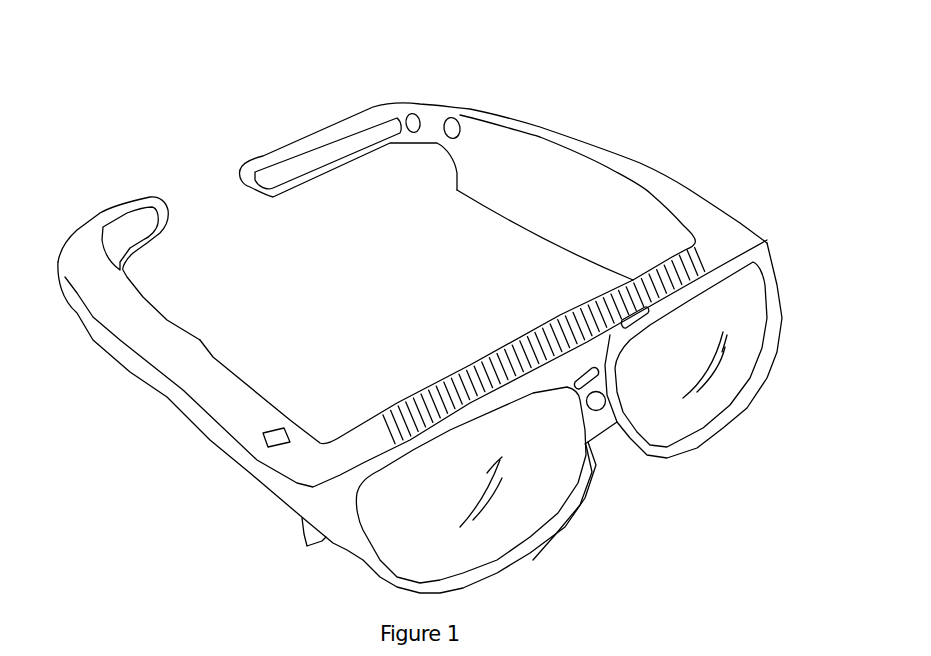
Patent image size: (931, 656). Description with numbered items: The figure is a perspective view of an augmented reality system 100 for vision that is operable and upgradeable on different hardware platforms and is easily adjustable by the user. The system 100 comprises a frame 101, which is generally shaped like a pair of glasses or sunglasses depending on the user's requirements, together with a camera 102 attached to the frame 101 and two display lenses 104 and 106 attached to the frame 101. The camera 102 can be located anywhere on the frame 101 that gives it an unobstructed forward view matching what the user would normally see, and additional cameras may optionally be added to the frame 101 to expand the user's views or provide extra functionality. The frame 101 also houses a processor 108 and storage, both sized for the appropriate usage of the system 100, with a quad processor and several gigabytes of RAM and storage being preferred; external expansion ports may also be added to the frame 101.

The augmented reality system 100 is at (386, 64).
The frame 101 is at (657, 180).
The camera 102 is at (603, 437).
The display lens 104 is at (513, 527).
The display lens 106 is at (723, 398).
The processor 108 is at (448, 384).